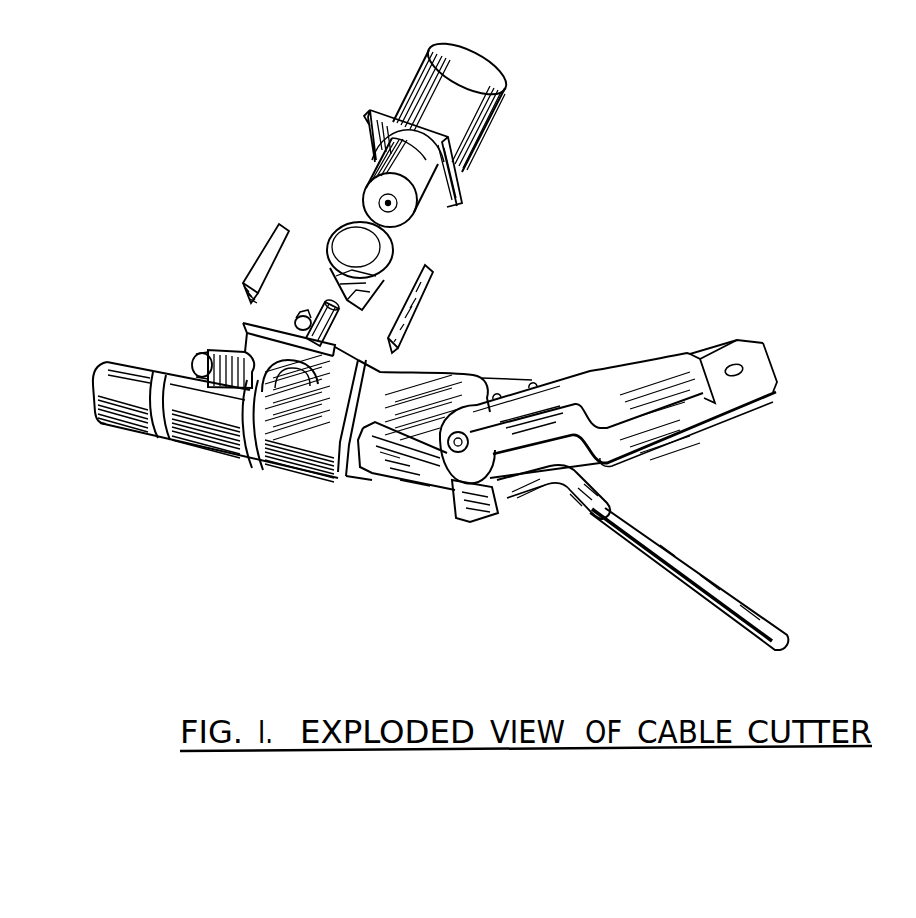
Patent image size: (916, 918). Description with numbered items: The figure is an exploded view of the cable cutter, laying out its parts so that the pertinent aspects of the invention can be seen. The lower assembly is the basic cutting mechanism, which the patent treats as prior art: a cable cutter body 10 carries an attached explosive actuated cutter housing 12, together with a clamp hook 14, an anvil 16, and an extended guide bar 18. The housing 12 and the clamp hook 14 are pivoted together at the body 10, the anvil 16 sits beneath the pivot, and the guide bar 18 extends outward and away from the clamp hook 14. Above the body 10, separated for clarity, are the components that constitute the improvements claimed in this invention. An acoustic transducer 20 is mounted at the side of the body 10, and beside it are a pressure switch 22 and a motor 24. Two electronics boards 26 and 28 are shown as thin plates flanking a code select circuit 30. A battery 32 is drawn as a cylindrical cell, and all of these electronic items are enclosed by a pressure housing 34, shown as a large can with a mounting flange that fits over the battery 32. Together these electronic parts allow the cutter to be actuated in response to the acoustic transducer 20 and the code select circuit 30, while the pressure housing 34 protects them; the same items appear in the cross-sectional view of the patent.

The cable cutter body 10 is at (222, 452).
The explosive actuated cutter housing 12 is at (606, 372).
The clamp hook 14 is at (432, 500).
The anvil 16 is at (486, 515).
The extended guide bar 18 is at (688, 562).
The acoustic transducer 20 is at (198, 356).
The pressure switch 22 is at (297, 308).
The motor 24 is at (333, 327).
The electronics board 26 is at (426, 306).
The electronics board 28 is at (262, 254).
The code select circuit 30 is at (386, 233).
The battery 32 is at (372, 172).
The pressure housing 34 is at (493, 74).